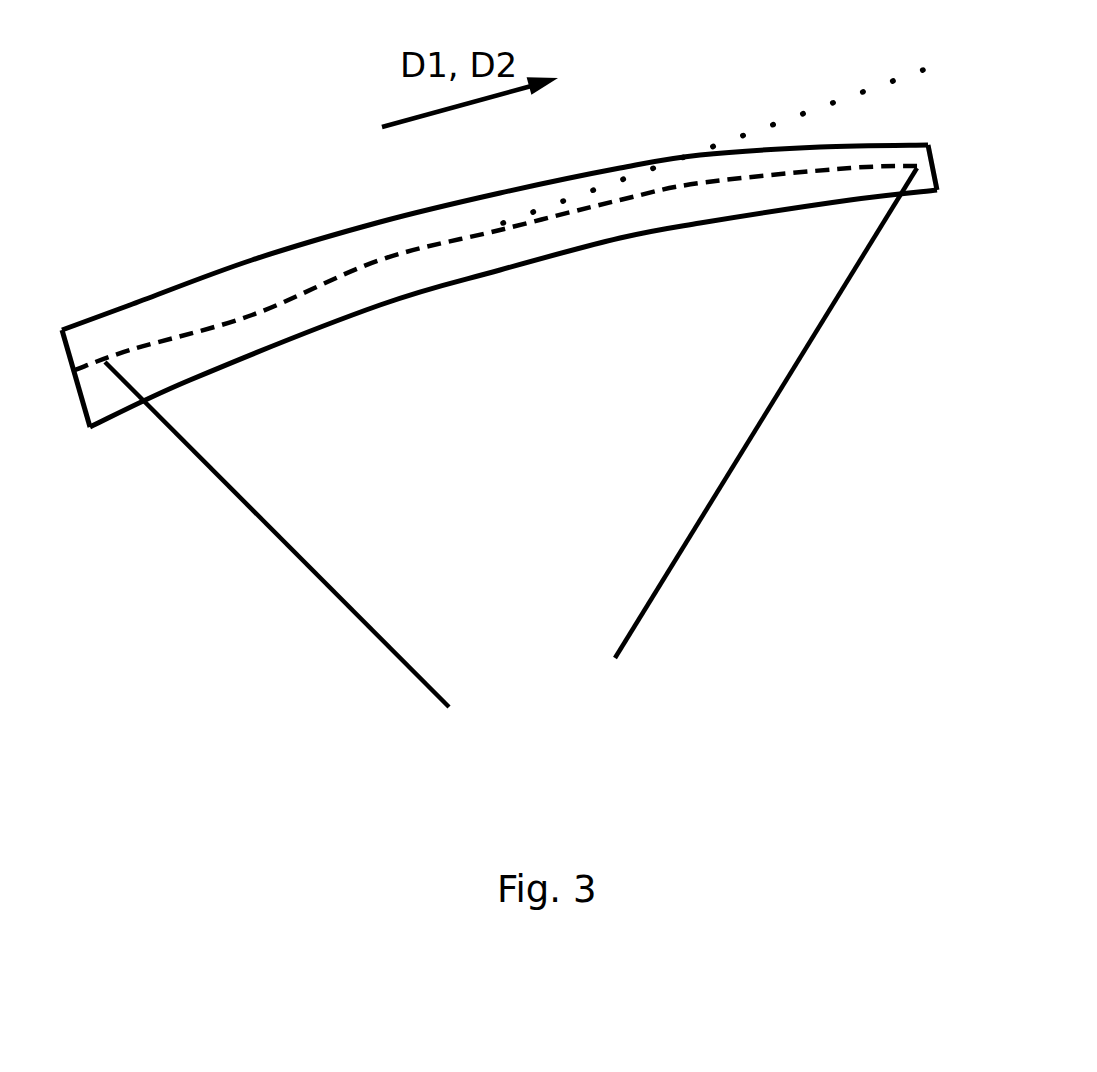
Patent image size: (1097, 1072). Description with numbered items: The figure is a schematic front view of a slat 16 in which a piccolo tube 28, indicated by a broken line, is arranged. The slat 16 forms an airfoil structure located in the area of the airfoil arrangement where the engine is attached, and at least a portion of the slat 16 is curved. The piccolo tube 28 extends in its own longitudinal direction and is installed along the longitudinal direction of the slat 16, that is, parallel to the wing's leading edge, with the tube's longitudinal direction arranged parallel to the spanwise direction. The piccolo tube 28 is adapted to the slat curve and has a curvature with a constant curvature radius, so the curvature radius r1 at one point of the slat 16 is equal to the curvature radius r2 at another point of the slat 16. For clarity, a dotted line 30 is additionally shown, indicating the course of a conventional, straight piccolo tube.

The slat 16 is at (252, 258).
The piccolo tube 28 is at (418, 250).
The dotted line 30 is at (833, 104).
The curvature radius r1 is at (350, 606).
The curvature radius r2 is at (697, 530).